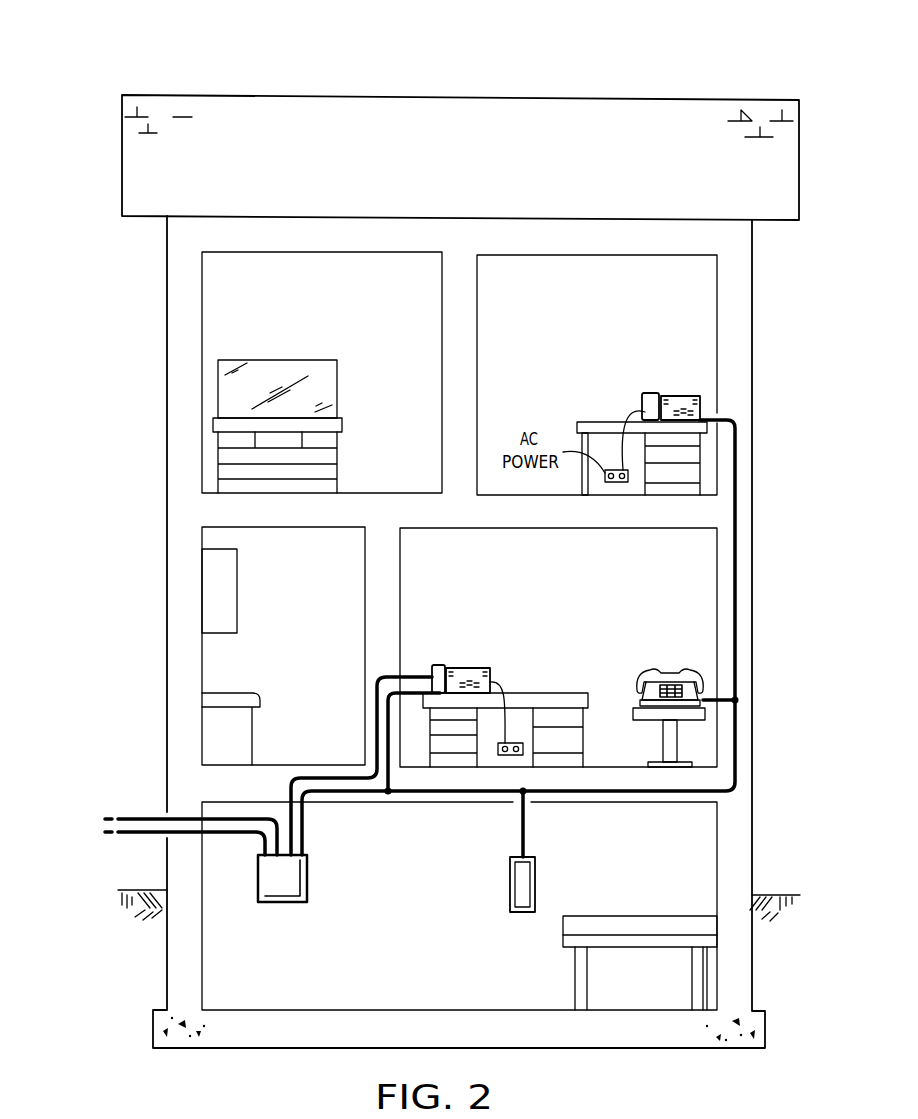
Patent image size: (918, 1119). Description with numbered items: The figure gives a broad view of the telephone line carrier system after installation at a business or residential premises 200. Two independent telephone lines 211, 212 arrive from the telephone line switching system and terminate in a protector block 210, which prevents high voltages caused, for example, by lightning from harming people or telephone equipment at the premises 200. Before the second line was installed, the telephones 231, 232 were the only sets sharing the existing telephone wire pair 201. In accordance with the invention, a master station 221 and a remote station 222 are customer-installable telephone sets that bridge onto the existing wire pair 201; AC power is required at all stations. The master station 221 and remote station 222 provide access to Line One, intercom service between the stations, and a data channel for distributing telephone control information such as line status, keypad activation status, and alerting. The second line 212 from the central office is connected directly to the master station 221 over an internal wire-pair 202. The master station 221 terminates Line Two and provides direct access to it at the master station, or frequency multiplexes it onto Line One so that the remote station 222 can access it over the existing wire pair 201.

The business or residential premises 200 is at (478, 69).
The existing telephone wire pair 201 is at (520, 664).
The internal wire-pair 202 is at (343, 755).
The protector block 210 is at (284, 920).
The telephone line 211 is at (165, 773).
The second telephone line 212 is at (136, 834).
The master station 221 is at (464, 640).
The remote station 222 is at (670, 368).
The telephone 231 is at (492, 917).
The telephone 232 is at (636, 646).